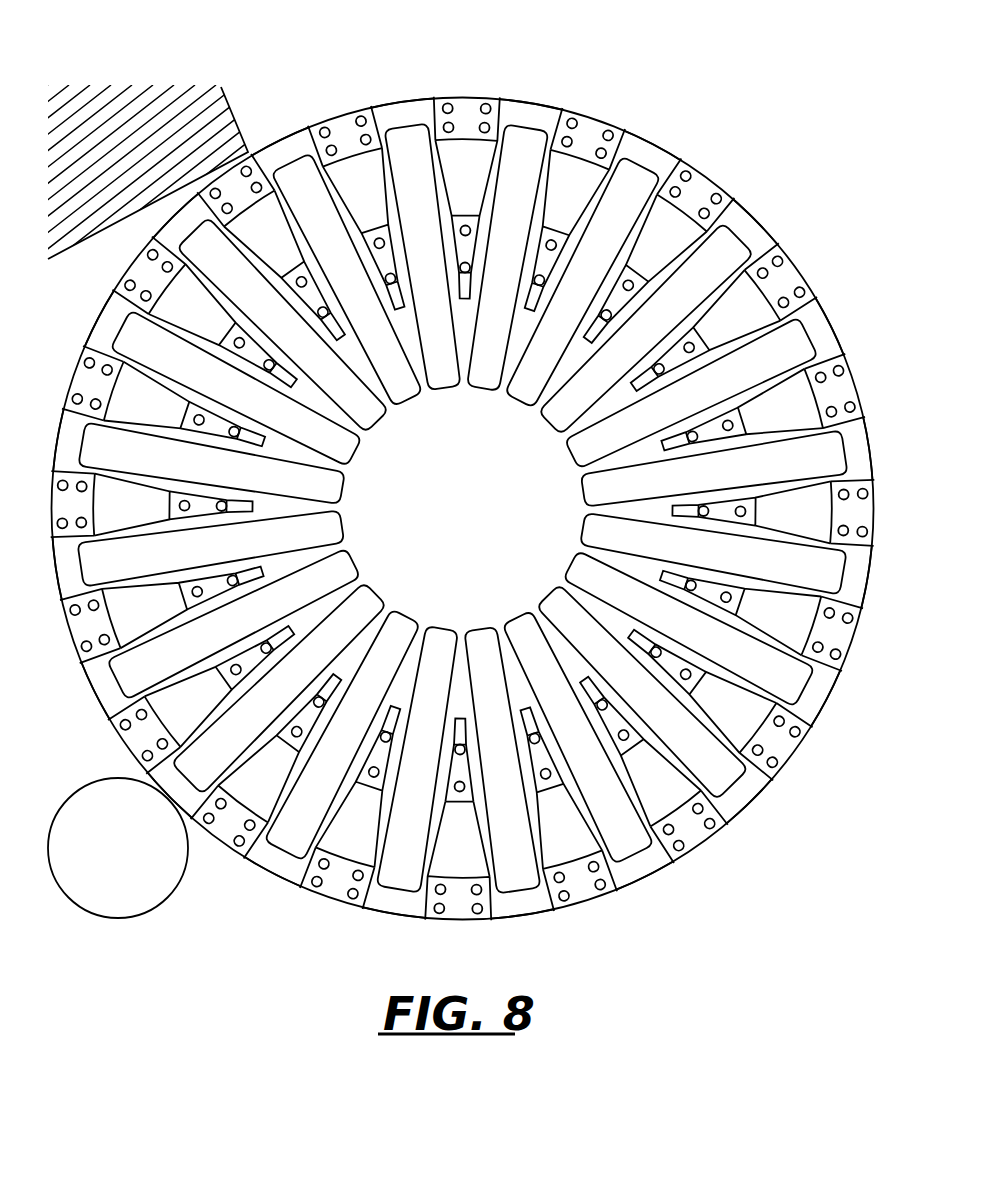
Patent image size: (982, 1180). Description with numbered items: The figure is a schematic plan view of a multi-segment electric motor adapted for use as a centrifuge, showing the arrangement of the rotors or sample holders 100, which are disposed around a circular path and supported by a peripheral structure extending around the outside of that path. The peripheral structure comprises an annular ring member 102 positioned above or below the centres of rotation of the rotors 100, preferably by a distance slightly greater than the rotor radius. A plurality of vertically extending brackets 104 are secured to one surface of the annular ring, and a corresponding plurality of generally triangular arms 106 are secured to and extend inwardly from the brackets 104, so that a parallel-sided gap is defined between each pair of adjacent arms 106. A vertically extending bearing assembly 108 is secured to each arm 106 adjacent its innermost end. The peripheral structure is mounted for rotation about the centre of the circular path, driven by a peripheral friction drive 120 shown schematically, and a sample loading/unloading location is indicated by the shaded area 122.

The rotors/sample holders 100 is at (462, 508).
The annular ring member 102 is at (752, 802).
The vertically extending brackets 104 is at (783, 747).
The generally triangular arms 106 is at (783, 763).
The vertically extending bearing assembly 108 is at (677, 665).
The peripheral friction drive 120 is at (118, 848).
The sample loading/unloading location 122 is at (212, 110).